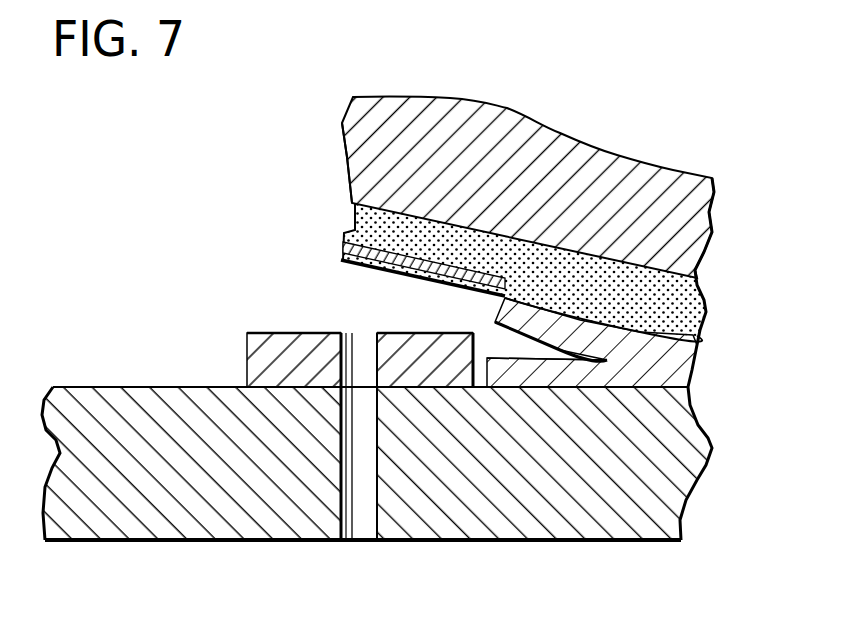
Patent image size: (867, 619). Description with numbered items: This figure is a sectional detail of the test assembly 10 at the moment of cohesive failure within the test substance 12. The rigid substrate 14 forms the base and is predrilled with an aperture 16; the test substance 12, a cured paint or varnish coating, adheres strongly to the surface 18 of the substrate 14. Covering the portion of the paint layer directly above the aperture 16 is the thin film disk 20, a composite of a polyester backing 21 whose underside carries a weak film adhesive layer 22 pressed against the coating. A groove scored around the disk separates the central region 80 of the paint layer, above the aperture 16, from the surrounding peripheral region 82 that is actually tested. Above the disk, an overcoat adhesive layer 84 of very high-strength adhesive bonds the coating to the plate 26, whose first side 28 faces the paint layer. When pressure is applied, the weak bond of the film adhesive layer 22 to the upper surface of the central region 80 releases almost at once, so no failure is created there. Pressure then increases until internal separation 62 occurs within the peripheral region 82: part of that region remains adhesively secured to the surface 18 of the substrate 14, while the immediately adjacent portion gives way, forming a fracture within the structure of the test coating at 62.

The test assembly 10 is at (108, 172).
The test substance 12 is at (708, 376).
The rigid substrate 14 is at (707, 499).
The aperture 16 is at (373, 517).
The surface of the substrate 18 is at (108, 386).
The thin film disk 20 is at (362, 226).
The polyester backing 21 is at (383, 245).
The film adhesive layer 22 is at (405, 268).
The plate 26 is at (514, 109).
The first side 28 is at (372, 206).
The internal separation 62 is at (510, 345).
The central region 80 is at (263, 355).
The peripheral region 82 is at (697, 350).
The overcoat adhesive layer 84 is at (697, 300).